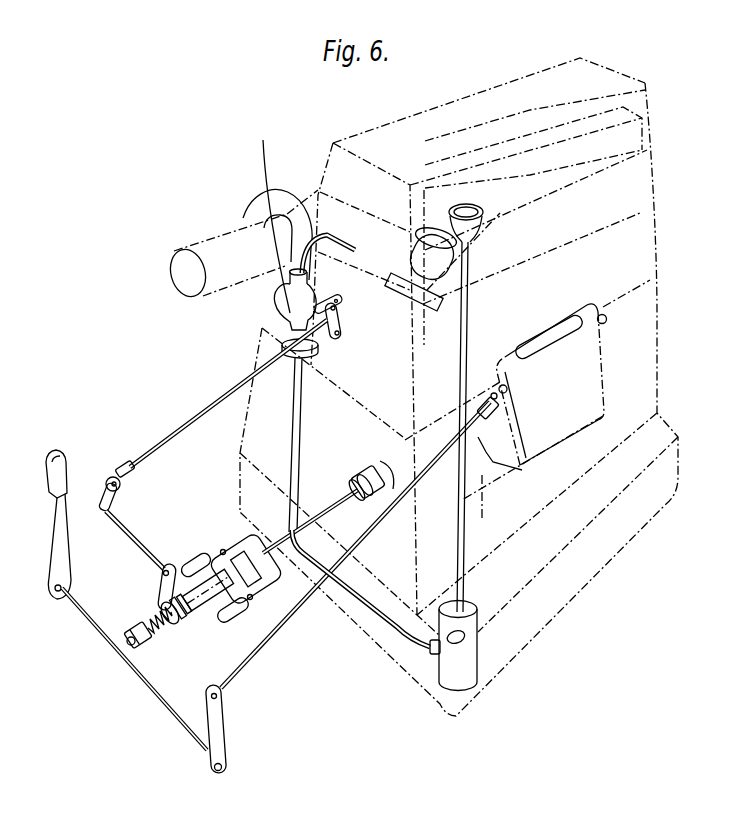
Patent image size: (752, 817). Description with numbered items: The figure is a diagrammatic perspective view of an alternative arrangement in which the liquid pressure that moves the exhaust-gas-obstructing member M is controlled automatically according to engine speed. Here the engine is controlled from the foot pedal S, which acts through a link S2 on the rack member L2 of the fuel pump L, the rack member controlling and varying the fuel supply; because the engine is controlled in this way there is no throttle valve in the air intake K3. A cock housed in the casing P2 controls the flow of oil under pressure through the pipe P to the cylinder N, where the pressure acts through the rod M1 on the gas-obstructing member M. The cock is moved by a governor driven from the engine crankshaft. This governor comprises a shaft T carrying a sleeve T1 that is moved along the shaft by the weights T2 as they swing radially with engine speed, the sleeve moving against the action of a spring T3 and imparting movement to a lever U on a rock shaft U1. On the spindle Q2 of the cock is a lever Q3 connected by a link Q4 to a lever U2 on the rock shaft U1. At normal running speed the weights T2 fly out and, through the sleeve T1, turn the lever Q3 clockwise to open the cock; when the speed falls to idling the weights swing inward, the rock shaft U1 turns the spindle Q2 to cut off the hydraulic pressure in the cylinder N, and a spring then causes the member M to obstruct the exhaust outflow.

The air intake K3 is at (207, 237).
The casing P2 is at (305, 328).
The gas-obstructing member M is at (478, 215).
The rod M1 is at (465, 327).
The cock spindle Q2 is at (343, 308).
The lever Q3 is at (343, 322).
The link Q4 is at (193, 415).
The foot pedal S is at (60, 450).
The link S2 is at (245, 670).
The lever U2 is at (108, 478).
The rock shaft U1 is at (122, 533).
The lever U is at (158, 591).
The shaft T is at (355, 498).
The sleeve T1 is at (203, 604).
The weights T2 is at (195, 568).
The spring T3 is at (158, 632).
The pipe P is at (390, 628).
The cylinder N is at (463, 651).
The fuel pump L is at (592, 374).
The rack member L2 is at (608, 316).